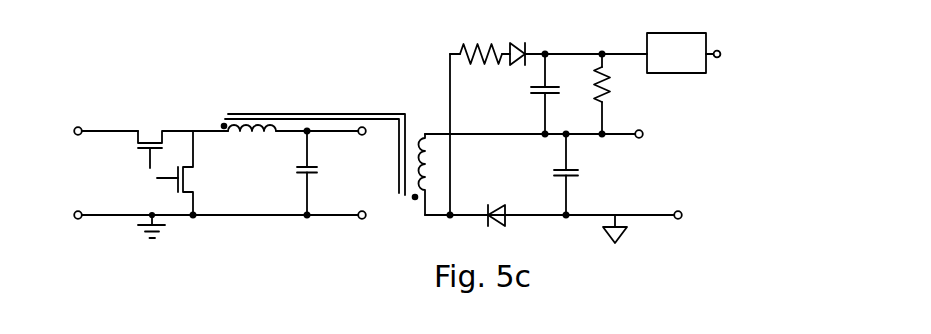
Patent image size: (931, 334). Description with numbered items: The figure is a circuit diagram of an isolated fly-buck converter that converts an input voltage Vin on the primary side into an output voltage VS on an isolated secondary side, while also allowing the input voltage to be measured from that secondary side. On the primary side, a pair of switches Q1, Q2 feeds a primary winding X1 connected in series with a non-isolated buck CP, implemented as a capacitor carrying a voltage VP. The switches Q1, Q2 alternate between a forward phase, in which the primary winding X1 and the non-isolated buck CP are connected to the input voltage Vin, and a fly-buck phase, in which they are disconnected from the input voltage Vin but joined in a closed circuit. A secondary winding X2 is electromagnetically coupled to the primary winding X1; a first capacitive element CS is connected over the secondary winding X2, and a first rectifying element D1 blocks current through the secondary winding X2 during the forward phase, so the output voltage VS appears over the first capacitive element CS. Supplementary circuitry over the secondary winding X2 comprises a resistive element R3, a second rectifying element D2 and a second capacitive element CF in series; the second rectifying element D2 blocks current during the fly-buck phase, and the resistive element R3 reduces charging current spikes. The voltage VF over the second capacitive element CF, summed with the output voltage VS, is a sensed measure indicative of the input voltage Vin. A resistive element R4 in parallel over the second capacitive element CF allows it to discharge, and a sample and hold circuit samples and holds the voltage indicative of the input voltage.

The input voltage Vin is at (118, 171).
The switch Q1 is at (165, 133).
The switch Q2 is at (191, 174).
The primary winding X1 is at (313, 154).
The secondary winding X2 is at (432, 174).
The non-isolated buck CP is at (296, 172).
The voltage over the non-isolated buck VP is at (337, 184).
The resistive element R3 is at (481, 36).
The second rectifying element D2 is at (525, 36).
The second capacitive element CF is at (532, 93).
The voltage over the second capacitive element VF is at (576, 94).
The resistive element R4 is at (619, 93).
The first capacitive element CS is at (553, 174).
The output voltage VS is at (592, 180).
The first rectifying element D1 is at (495, 233).